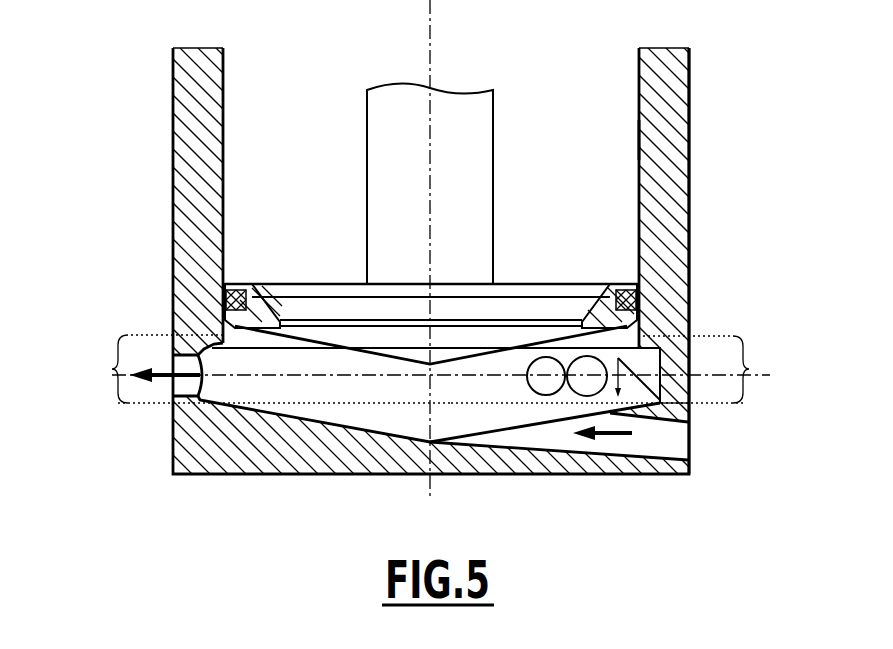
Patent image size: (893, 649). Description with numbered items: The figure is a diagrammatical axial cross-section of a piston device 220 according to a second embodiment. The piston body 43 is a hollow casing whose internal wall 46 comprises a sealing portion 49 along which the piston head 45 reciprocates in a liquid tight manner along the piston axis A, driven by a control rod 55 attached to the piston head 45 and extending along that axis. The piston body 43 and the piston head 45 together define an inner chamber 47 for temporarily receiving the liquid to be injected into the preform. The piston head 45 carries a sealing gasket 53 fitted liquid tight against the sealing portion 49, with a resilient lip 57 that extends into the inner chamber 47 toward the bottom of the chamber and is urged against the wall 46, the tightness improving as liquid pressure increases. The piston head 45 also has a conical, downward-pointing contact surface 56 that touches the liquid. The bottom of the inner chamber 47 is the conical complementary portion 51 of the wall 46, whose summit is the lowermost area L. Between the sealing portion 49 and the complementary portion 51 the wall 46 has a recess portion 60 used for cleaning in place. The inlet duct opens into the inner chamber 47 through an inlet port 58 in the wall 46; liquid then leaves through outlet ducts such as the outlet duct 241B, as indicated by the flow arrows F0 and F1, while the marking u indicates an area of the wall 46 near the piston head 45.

The valve assembly 220 is at (122, 52).
The piston body 43 is at (677, 93).
The internal wall 46 is at (230, 120).
The sealing portion 49 is at (633, 138).
The piston axis A is at (432, 30).
The control rod 55 is at (487, 123).
The piston head 45 is at (553, 284).
The sealing gasket 53 is at (637, 284).
The contact surface 56 is at (354, 364).
The lip 57 is at (640, 338).
The recess portion 60 is at (203, 350).
The inner chamber 47 is at (392, 400).
The inlet port 58 is at (578, 412).
The lowermost area L is at (433, 446).
The complementary portion 51 is at (600, 392).
The outlet duct 241B is at (622, 400).
The liquid flow arrow F1 is at (160, 380).
The inlet flow F0 is at (602, 472).
The displacement u is at (433, 369).